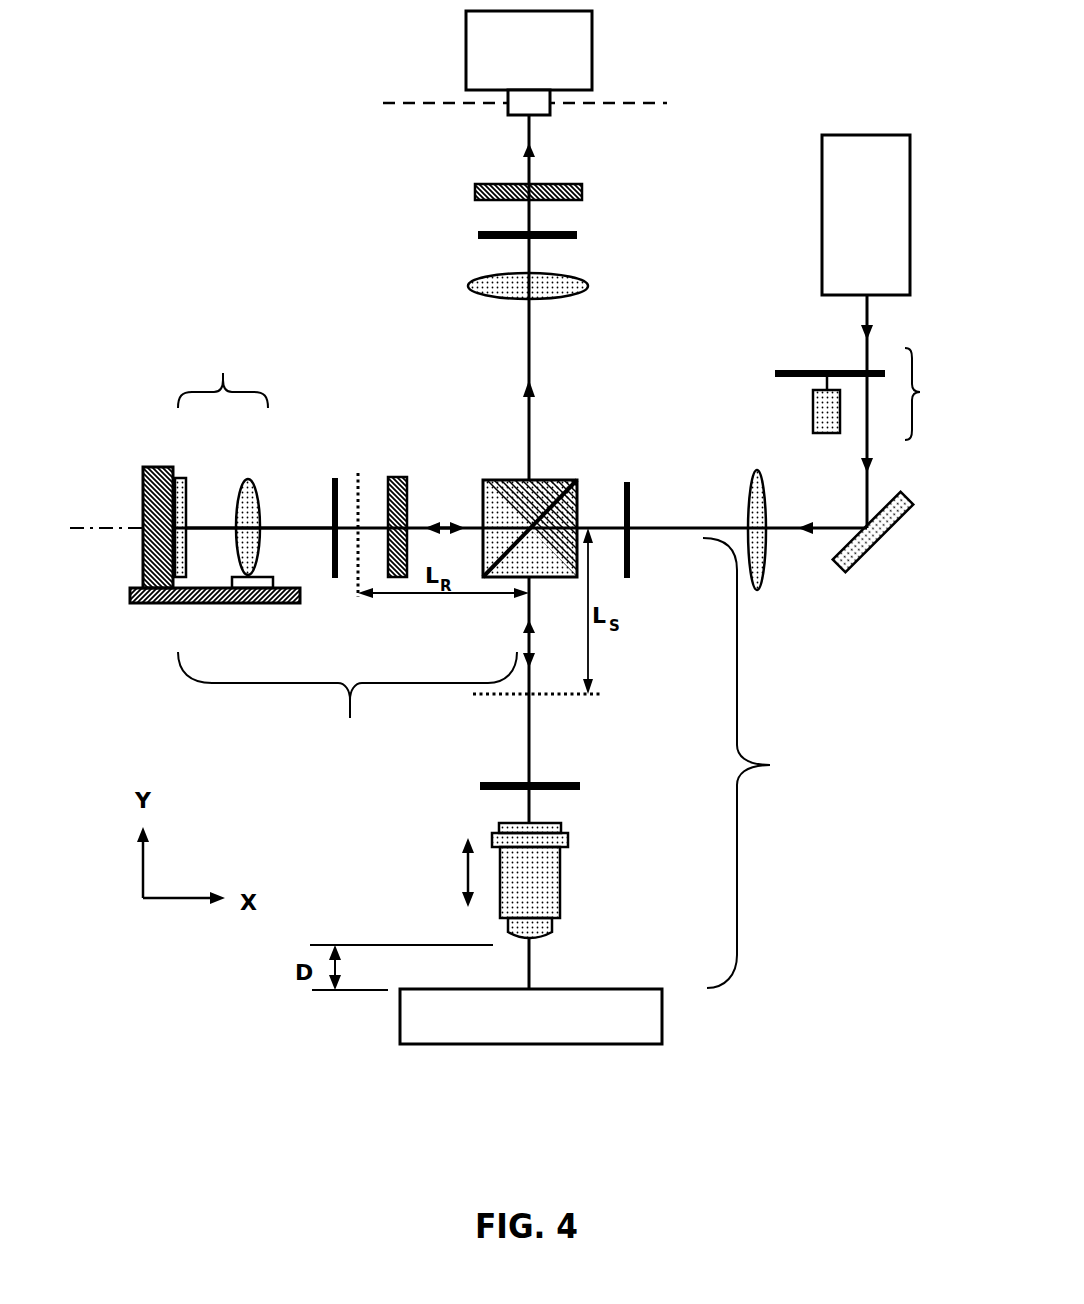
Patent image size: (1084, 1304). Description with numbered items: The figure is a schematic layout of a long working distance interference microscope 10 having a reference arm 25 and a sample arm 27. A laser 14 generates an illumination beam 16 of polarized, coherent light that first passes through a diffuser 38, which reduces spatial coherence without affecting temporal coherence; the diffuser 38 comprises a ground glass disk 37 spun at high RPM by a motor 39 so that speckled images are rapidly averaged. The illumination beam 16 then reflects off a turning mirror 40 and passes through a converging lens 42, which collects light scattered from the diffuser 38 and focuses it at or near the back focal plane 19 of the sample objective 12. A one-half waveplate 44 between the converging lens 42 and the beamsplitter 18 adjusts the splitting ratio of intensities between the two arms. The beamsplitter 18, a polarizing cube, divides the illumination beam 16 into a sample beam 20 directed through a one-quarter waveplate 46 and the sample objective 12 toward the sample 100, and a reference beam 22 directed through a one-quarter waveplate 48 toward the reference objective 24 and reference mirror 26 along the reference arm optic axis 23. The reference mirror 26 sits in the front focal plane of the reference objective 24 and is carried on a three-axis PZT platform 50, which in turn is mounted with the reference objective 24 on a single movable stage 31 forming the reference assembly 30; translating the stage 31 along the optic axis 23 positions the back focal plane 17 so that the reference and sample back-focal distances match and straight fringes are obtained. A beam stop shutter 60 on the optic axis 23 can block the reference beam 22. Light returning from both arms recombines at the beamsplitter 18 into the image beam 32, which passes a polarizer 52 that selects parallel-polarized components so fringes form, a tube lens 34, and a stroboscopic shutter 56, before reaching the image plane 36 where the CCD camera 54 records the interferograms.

The microscope 10 is at (233, 118).
The sample objective 12 is at (537, 902).
The laser 14 is at (850, 135).
The illumination beam 16 is at (870, 318).
The back focal plane of reference objective 17 is at (358, 597).
The beamsplitter 18 is at (552, 477).
The back focal plane of sample objective 19 is at (558, 697).
The sample beam 20 is at (525, 728).
The reference beam 22 is at (277, 525).
The optic axis 23 is at (106, 512).
The reference objective 24 is at (252, 477).
The reference arm 25 is at (347, 701).
The reference mirror 26 is at (183, 475).
The sample arm 27 is at (756, 763).
The reference assembly 30 is at (223, 375).
The stage 31 is at (168, 603).
The image beam 32 is at (528, 363).
The tube lens 34 is at (580, 280).
The image plane 36 is at (507, 104).
The ground glass disk 37 is at (798, 370).
The diffuser 38 is at (934, 394).
The motor 39 is at (827, 433).
The turning mirror 40 is at (863, 560).
The converging lens 42 is at (767, 570).
The one-half waveplate 44 is at (632, 563).
The one-quarter waveplate 46 is at (483, 790).
The one-quarter waveplate 48 is at (333, 580).
The PZT platform 50 is at (160, 467).
The polarizer 52 is at (478, 239).
The CCD camera 54 is at (592, 37).
The stroboscopic shutter 56 is at (475, 190).
The beam stop shutter 60 is at (403, 478).
The sample 100 is at (603, 1032).